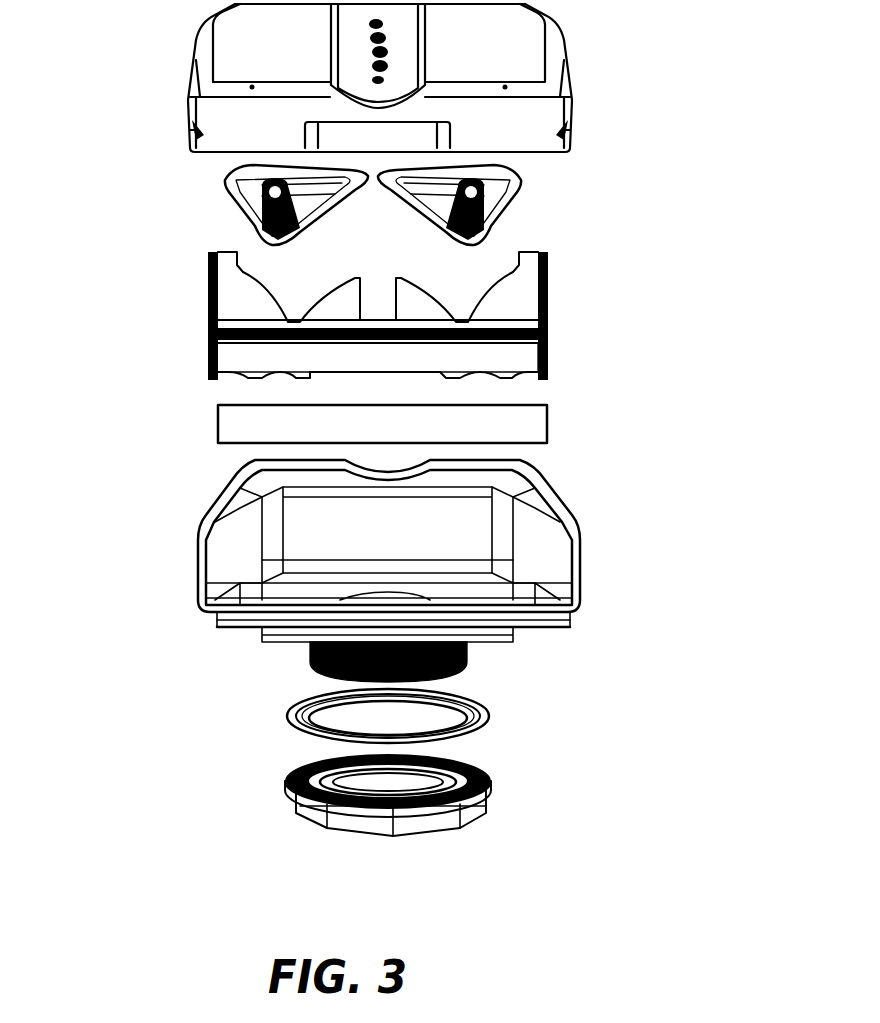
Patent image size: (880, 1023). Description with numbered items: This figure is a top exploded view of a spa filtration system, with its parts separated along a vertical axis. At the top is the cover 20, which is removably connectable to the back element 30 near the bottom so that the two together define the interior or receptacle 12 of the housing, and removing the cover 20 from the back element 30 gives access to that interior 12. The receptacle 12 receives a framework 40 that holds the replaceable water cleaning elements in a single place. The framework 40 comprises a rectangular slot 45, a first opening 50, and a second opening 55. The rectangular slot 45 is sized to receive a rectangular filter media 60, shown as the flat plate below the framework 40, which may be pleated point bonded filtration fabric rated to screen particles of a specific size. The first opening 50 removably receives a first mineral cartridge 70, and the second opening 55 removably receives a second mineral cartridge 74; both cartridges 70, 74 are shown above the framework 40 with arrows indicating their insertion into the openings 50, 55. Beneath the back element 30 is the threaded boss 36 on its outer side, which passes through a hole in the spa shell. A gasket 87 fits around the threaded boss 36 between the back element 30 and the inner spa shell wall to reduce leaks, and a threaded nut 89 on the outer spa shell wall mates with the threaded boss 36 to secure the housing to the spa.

The cover 20 is at (255, 52).
The second mineral cartridge 74 is at (232, 190).
The first mineral cartridge 70 is at (508, 186).
The second opening 55 is at (287, 298).
The first opening 50 is at (460, 298).
The framework 40 is at (390, 300).
The rectangular slot 45 is at (497, 356).
The rectangular filter media 60 is at (530, 418).
The interior 12 is at (458, 543).
The back element 30 is at (578, 607).
The threaded boss 36 is at (307, 652).
The gasket 87 is at (487, 716).
The threaded nut 89 is at (492, 780).